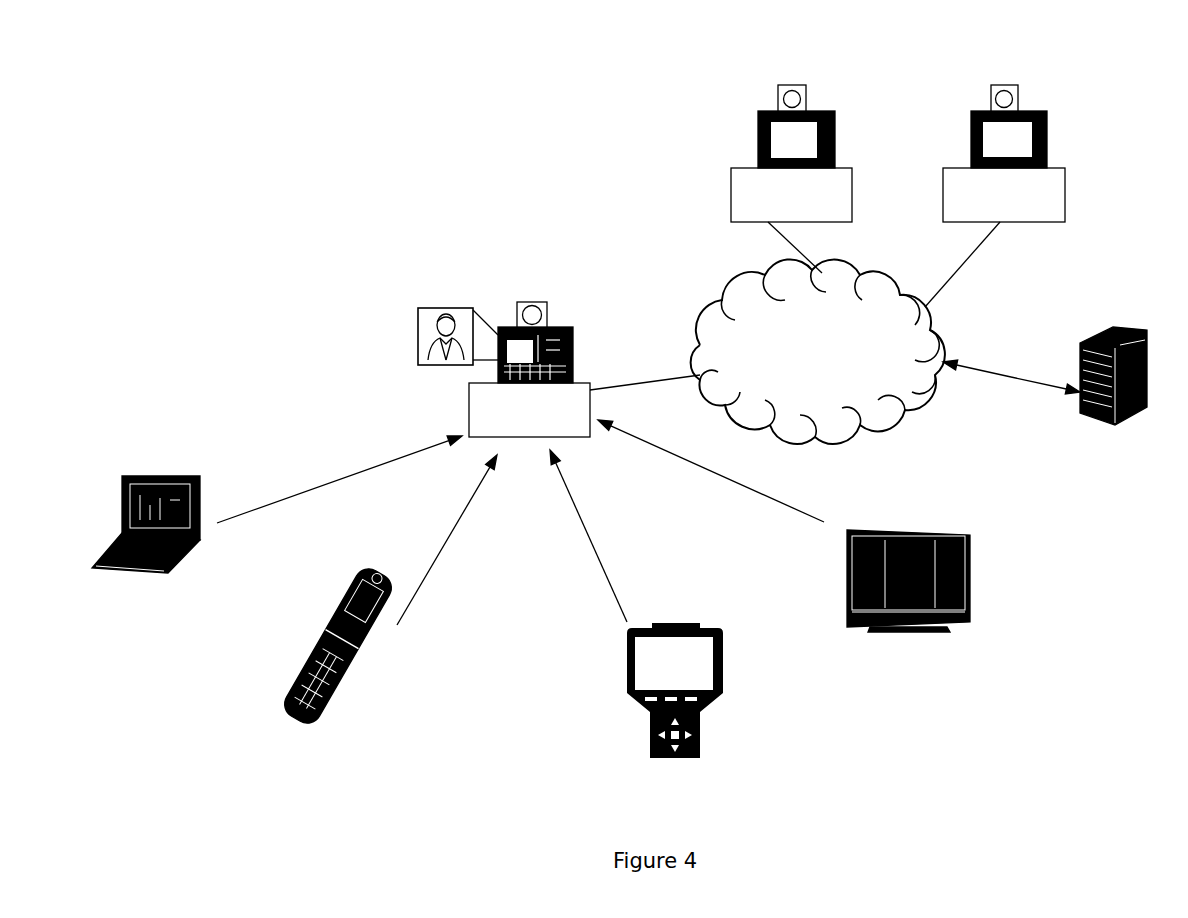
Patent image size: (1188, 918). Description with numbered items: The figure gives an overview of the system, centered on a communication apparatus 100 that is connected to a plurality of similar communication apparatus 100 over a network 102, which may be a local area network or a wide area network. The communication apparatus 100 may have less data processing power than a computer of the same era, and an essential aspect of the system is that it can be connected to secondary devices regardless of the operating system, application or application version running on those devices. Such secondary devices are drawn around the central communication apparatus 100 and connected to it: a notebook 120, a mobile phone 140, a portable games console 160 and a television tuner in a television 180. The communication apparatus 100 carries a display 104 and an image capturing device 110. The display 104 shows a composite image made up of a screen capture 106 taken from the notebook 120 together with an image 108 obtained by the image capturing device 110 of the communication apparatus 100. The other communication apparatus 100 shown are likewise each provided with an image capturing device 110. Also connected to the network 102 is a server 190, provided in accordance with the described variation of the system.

The communication apparatus 100 is at (484, 415).
The network 102 is at (735, 340).
The display 104 is at (573, 337).
The screen capture 106 is at (142, 477).
The image 108 is at (418, 325).
The image capturing device 110 is at (545, 302).
The notebook 120 is at (115, 570).
The mobile phone 140 is at (296, 706).
The portable games console 160 is at (650, 722).
The television 180 is at (868, 623).
The server 190 is at (1095, 420).